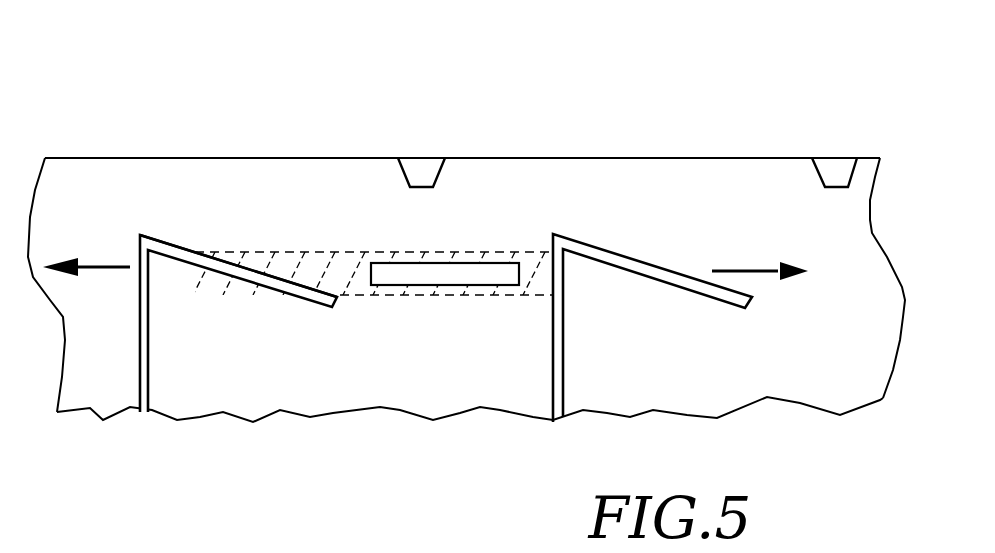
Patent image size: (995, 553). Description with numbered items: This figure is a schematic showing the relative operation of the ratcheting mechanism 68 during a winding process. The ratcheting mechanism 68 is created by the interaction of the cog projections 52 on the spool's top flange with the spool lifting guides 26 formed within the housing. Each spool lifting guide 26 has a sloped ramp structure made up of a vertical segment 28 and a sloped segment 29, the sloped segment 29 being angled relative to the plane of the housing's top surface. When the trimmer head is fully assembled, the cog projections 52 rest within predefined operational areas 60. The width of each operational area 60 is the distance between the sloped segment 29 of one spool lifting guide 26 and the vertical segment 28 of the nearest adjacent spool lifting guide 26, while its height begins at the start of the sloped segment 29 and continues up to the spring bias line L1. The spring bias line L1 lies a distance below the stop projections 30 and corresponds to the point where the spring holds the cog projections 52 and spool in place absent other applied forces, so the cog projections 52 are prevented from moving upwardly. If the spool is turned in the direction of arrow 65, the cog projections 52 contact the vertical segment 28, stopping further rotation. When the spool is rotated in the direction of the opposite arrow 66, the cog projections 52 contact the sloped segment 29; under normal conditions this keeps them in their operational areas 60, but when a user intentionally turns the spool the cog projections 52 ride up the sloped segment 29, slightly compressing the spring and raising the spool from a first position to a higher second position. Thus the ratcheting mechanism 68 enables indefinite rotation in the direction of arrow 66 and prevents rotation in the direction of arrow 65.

The ratcheting mechanism 68 is at (145, 107).
The arrow 66 is at (102, 262).
The sloped segment 29 is at (183, 247).
The stop projections 30 is at (425, 176).
The spring bias line L1 is at (466, 252).
The cog projections 52 is at (488, 276).
The arrow 65 is at (755, 268).
The operational areas 60 is at (355, 284).
The spool lifting guides 26 is at (258, 287).
The vertical segment 28 is at (553, 348).